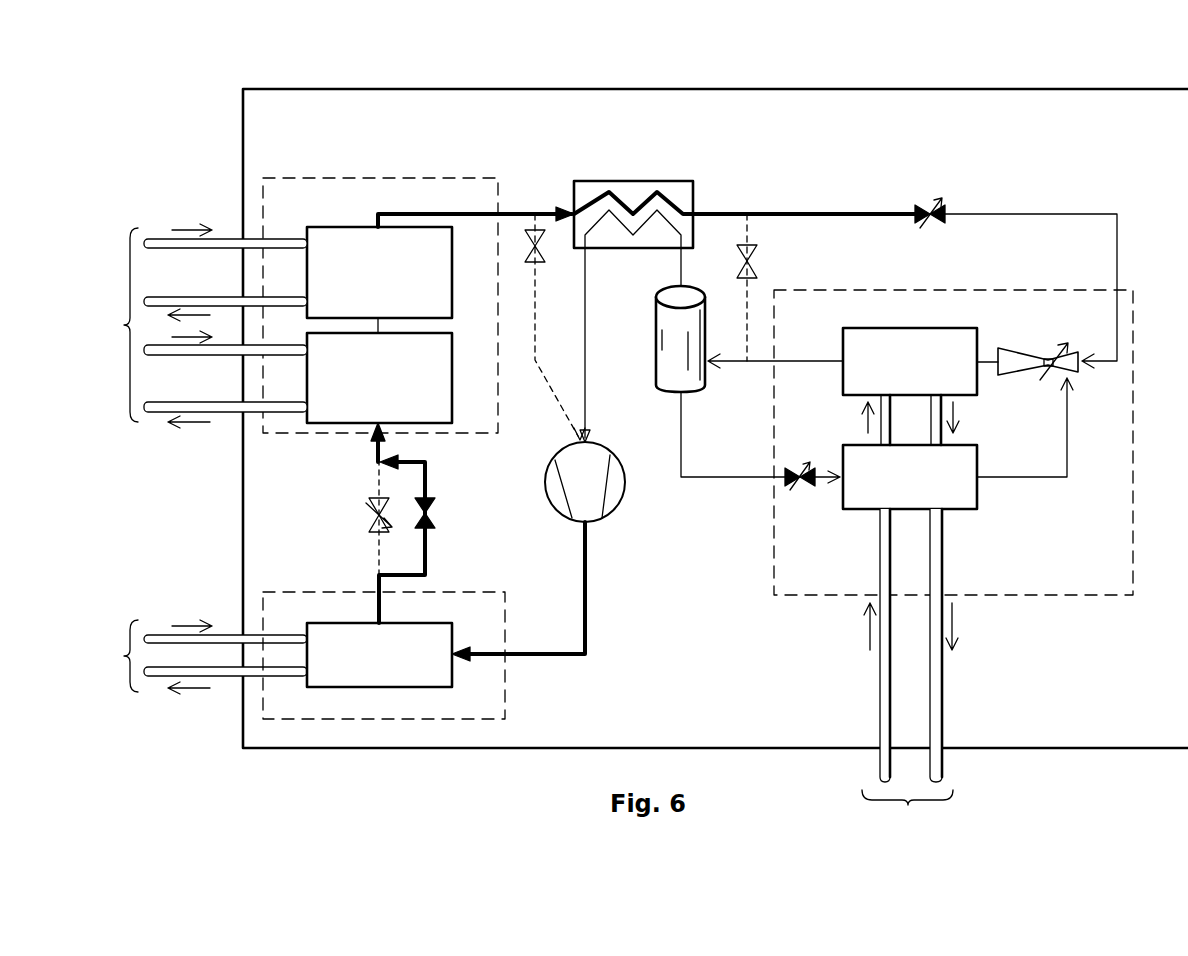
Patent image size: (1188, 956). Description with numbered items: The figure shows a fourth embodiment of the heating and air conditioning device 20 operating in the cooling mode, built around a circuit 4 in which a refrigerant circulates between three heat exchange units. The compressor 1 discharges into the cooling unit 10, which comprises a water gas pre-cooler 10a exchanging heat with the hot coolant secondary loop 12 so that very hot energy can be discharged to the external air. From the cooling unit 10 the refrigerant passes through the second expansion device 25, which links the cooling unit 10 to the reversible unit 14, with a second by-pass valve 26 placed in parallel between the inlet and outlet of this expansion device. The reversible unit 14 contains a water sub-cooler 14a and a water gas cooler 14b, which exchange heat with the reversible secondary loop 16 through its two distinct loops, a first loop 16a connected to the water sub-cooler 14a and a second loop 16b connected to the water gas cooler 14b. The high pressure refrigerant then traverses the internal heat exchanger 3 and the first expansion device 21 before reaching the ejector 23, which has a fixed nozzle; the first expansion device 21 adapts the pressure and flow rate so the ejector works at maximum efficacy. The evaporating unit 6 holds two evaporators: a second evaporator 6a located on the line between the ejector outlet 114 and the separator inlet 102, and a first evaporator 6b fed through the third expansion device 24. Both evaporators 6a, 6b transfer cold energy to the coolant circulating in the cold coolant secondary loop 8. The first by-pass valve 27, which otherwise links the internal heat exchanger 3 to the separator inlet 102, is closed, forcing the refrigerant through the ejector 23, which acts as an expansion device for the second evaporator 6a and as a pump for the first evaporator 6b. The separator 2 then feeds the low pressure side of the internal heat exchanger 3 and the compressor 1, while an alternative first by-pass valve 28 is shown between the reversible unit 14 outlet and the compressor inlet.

The compressor 1 is at (617, 495).
The separator 2 is at (665, 360).
The internal heat exchanger 3 is at (668, 185).
The circuit 4 is at (1023, 214).
The evaporating unit 6 is at (953, 442).
The second evaporator 6a is at (933, 335).
The first evaporator 6b is at (958, 505).
The secondary loop 8 is at (910, 668).
The cooling unit 10 is at (505, 683).
The water gas pre-cooler 10a is at (422, 675).
The secondary loop 12 is at (198, 657).
The reversible unit 14 is at (428, 178).
The water sub-cooler 14a is at (355, 240).
The water gas cooler 14b is at (332, 423).
The secondary loop 16 is at (115, 325).
The first loop 16a is at (222, 240).
The second loop 16b is at (158, 355).
The heating and air conditioning device 20 is at (715, 418).
The first expansion device 21 is at (917, 206).
The ejector 23 is at (1025, 355).
The third expansion device 24 is at (787, 487).
The second expansion device 25 is at (370, 525).
The second by-pass valve 26 is at (437, 518).
The first by-pass valve 27 is at (752, 252).
The first by-pass valve 28 is at (540, 253).
The inlet of separator 102 is at (707, 366).
The ejector outlet 114 is at (978, 367).